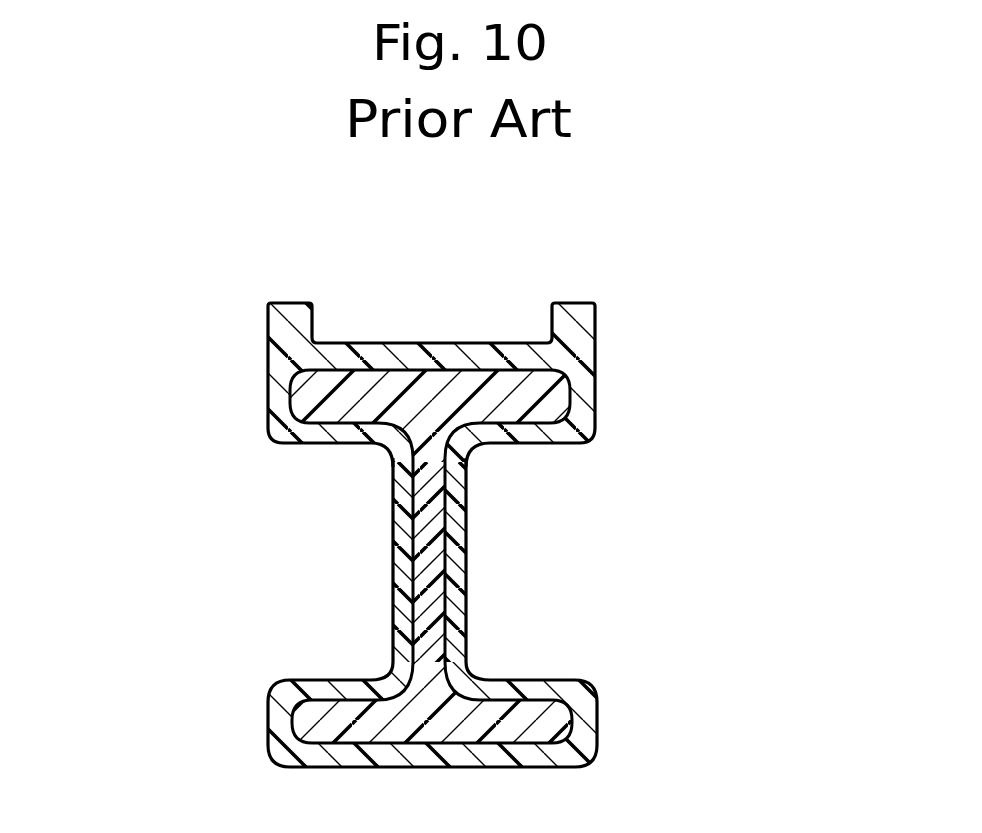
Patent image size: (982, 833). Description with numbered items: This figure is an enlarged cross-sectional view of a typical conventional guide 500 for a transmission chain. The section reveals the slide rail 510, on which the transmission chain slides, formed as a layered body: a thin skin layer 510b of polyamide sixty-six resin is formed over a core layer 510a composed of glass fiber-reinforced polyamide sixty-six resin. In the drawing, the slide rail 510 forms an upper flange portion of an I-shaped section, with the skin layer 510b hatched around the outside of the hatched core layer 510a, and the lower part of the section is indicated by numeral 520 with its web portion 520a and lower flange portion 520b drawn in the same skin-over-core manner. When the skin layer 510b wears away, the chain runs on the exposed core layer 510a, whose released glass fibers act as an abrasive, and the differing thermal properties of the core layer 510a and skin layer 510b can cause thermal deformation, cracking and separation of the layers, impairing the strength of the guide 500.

The guide 500 is at (160, 343).
The slide rail 510 is at (790, 295).
The core layer 510a is at (548, 398).
The skin layer 510b is at (565, 348).
The web and lower flange portion 520 is at (787, 552).
The web portion 520a is at (432, 593).
The lower flange portion 520b is at (575, 720).